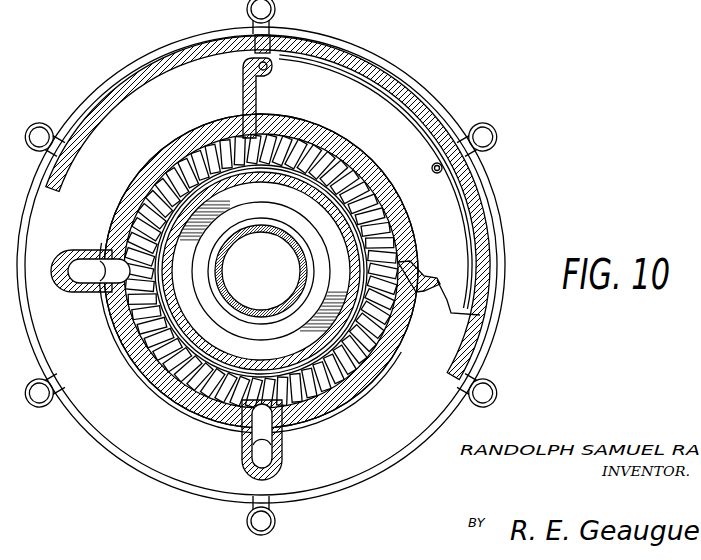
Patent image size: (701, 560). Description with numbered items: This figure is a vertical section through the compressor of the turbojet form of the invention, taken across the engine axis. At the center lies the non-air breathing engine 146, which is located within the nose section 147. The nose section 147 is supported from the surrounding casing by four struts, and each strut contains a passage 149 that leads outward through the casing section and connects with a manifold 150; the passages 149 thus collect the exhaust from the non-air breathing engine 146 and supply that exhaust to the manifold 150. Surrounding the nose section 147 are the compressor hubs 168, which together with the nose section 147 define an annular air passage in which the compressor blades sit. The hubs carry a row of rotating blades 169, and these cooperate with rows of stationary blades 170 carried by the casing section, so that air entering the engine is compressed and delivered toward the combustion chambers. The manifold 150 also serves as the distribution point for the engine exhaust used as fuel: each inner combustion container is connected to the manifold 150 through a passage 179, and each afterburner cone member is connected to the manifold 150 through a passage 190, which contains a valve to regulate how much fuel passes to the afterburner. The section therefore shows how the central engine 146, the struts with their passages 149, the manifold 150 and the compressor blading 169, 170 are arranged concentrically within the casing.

The non-air breathing engine 146 is at (265, 312).
The nose section 147 is at (297, 172).
The passage 149 is at (84, 284).
The manifold 150 is at (385, 92).
The compressor hubs 168 is at (222, 164).
The blades 169 is at (197, 138).
The stationary blades 170 is at (164, 170).
The passage 179 is at (438, 174).
The passage 190 is at (487, 128).